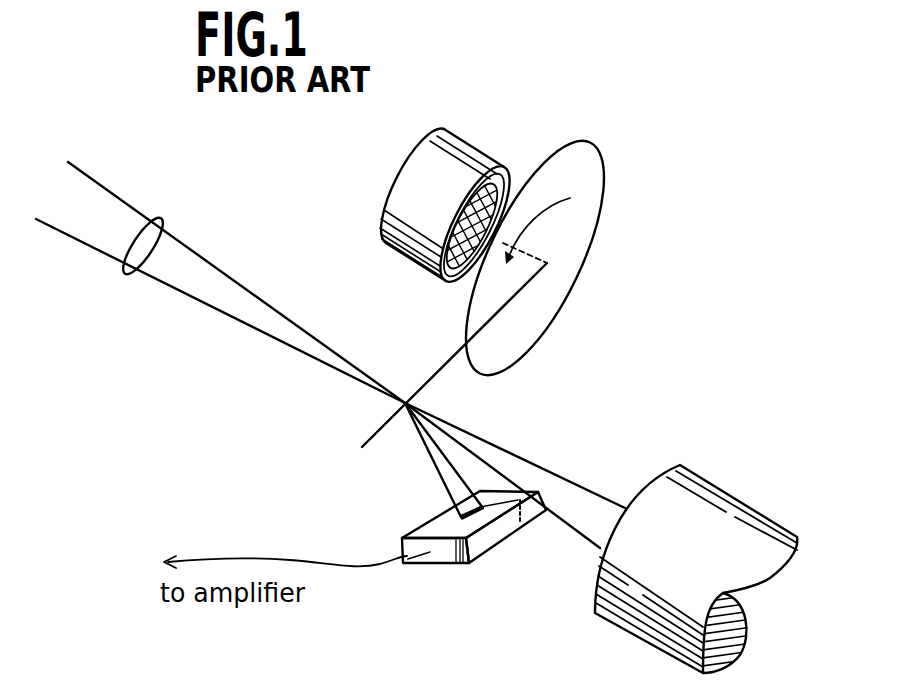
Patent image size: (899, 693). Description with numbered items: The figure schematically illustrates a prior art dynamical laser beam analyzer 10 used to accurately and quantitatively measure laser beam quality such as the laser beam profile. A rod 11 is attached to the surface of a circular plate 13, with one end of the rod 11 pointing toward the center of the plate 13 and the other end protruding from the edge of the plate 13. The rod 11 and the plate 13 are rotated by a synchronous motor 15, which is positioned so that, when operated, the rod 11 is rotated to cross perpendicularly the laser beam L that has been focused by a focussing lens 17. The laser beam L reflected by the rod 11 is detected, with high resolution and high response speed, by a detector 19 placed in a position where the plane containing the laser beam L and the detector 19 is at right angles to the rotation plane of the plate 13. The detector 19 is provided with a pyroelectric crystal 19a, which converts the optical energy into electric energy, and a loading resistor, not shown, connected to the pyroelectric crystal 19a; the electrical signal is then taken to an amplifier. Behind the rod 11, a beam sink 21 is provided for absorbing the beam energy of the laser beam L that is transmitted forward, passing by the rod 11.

The dynamical laser beam analyzer 10 is at (460, 100).
The rod 11 is at (432, 374).
The circular plate 13 is at (603, 180).
The synchronous motor 15 is at (468, 150).
The focussing lens 17 is at (122, 272).
The detector 19 is at (477, 567).
The pyroelectric crystal 19a is at (518, 538).
The beam sink 21 is at (723, 482).
The laser beam L is at (332, 373).